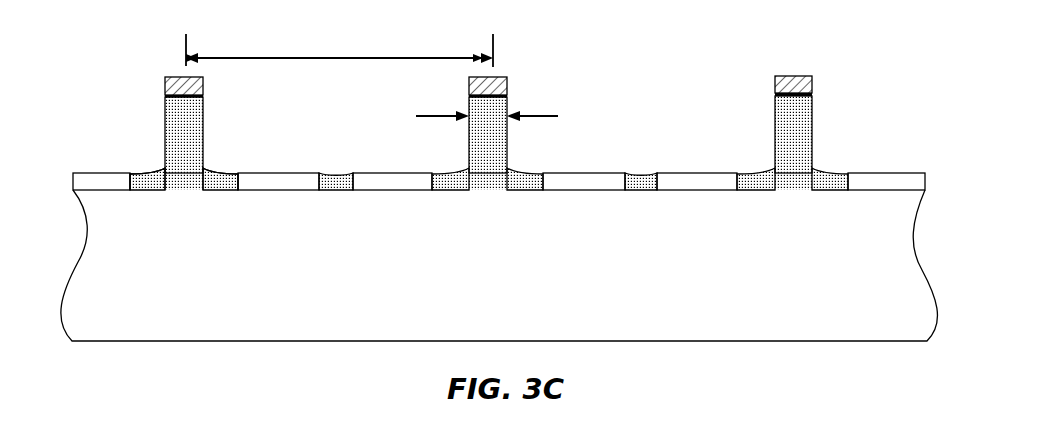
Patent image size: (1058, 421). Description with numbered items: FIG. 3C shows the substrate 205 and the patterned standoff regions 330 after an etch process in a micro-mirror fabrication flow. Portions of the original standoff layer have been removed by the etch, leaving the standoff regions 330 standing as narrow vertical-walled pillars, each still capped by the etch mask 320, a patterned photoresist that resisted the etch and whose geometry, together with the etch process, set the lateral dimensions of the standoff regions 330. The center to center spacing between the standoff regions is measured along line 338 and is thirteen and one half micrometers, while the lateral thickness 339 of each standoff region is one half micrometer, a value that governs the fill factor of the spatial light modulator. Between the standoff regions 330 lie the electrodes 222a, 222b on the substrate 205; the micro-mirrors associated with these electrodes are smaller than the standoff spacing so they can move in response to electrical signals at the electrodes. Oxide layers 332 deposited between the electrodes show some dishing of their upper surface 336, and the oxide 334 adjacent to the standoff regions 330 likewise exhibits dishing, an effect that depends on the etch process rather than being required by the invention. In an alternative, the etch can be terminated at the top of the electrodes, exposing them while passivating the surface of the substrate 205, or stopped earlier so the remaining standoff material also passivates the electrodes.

The substrate 205 is at (869, 320).
The electrode 222a is at (585, 180).
The electrode 222b is at (698, 182).
The etch mask 320 is at (483, 83).
The standoff region 330 is at (183, 124).
The oxide layer 332 is at (332, 190).
The oxide 334 is at (223, 190).
The upper surface 336 is at (636, 173).
The line 338 is at (339, 47).
The lateral thickness 339 is at (542, 109).